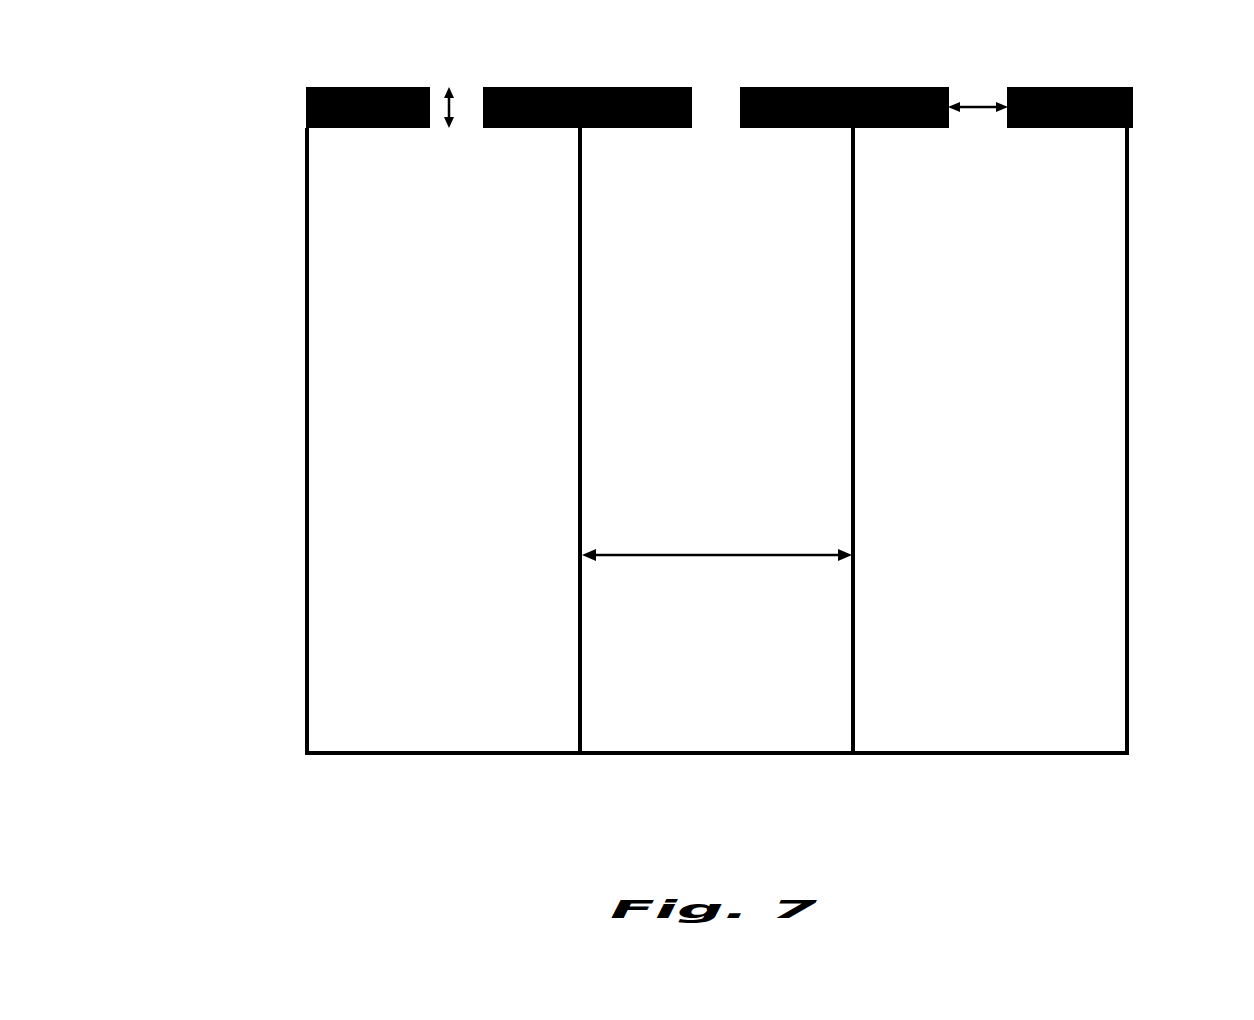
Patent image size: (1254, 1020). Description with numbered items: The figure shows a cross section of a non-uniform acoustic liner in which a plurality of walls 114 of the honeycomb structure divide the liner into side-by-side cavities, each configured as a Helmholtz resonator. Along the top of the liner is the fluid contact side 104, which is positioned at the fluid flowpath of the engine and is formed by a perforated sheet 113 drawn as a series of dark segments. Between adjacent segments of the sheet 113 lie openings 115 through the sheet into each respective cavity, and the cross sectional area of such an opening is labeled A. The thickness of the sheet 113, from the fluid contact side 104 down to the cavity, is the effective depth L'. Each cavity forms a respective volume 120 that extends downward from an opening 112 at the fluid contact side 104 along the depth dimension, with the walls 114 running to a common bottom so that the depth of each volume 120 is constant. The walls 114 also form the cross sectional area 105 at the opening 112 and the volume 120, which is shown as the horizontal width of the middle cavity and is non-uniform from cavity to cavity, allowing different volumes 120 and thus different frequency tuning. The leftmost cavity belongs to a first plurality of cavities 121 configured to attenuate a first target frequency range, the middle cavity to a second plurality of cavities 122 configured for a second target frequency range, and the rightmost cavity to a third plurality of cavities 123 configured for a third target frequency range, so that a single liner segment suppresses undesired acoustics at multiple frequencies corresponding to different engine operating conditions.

The fluid contact side 104 is at (743, 43).
The cross sectional area 105 is at (660, 557).
The opening 112 is at (719, 166).
The perforated sheet 113 is at (326, 102).
The walls 114 is at (308, 270).
The opening through perforated sheet 115 is at (974, 151).
The volume 120 is at (470, 437).
The first plurality of cavities 121 is at (340, 652).
The second plurality of cavities 122 is at (718, 728).
The third plurality of cavities 123 is at (1096, 625).
The effective depth L' is at (413, 85).
The cross sectional area of opening through perforated sheet A is at (977, 106).